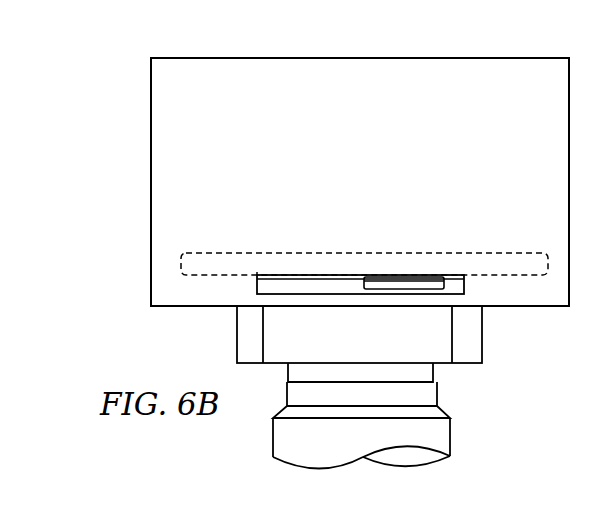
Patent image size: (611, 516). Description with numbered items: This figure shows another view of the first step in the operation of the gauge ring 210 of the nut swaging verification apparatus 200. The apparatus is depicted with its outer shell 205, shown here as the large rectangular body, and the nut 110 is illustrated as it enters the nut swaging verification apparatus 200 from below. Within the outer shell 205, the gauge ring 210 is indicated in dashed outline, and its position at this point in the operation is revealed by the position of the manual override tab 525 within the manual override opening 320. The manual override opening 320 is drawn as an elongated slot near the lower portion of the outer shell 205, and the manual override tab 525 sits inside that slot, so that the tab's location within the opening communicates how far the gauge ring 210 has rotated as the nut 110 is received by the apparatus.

The nut swaging verification apparatus 200 is at (119, 121).
The outer shell 205 is at (151, 180).
The gauge ring 210 is at (457, 252).
The manual override opening 320 is at (257, 284).
The manual override tab 525 is at (366, 286).
The nut 110 is at (482, 333).